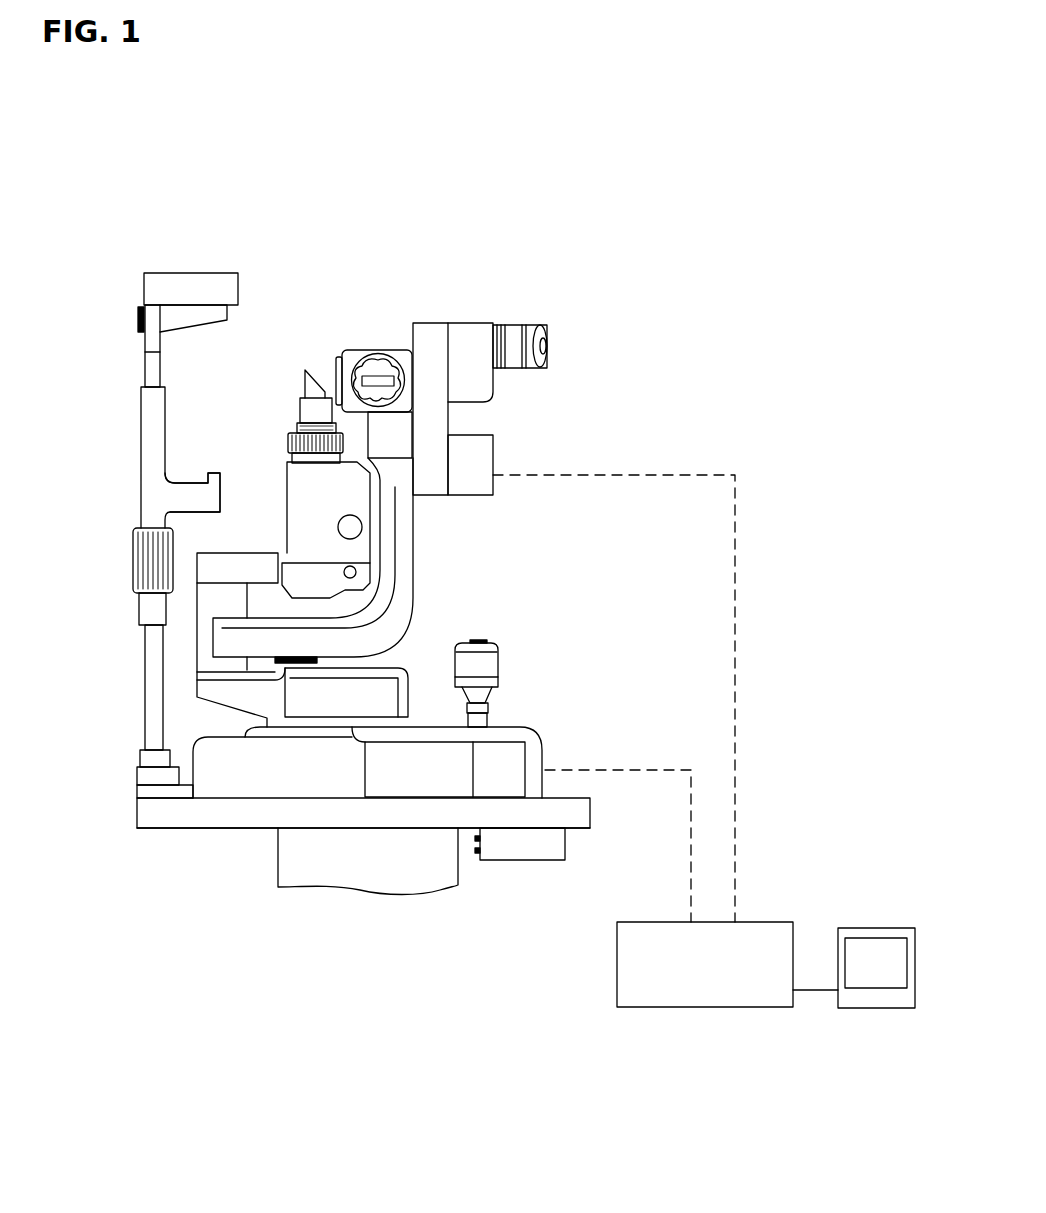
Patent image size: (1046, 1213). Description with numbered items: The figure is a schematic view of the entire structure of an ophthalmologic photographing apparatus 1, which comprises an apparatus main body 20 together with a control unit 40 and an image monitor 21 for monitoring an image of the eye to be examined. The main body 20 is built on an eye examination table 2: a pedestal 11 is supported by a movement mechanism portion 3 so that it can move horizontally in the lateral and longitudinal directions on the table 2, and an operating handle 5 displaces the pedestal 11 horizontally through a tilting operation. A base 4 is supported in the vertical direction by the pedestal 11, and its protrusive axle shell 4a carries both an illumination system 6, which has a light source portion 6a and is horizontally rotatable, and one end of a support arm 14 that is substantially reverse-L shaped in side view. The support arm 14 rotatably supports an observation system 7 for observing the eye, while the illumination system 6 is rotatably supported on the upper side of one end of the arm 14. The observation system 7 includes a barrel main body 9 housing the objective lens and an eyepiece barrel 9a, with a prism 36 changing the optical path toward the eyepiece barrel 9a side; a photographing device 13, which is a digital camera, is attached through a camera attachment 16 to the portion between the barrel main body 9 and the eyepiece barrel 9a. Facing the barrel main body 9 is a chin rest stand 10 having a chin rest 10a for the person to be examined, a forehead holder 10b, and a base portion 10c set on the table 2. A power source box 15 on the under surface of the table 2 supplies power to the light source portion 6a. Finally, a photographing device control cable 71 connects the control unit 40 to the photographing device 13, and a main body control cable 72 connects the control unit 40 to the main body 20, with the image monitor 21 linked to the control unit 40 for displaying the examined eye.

The ophthalmologic photographing apparatus 1 is at (674, 368).
The eye examination table 2 is at (176, 816).
The movement mechanism portion 3 is at (255, 775).
The base 4 is at (378, 678).
The protrusive axle shell 4a is at (240, 692).
The operating handle 5 is at (498, 666).
The illumination system 6 is at (278, 462).
The light source portion 6a is at (325, 558).
The observation system 7 is at (393, 280).
The barrel main body 9 is at (362, 350).
The eyepiece barrel 9a is at (471, 325).
The chin rest stand 10 is at (122, 472).
The chin rest 10a is at (190, 494).
The forehead holder 10b is at (188, 322).
The base portion 10c is at (140, 772).
The pedestal 11 is at (515, 755).
The photographing device 13 is at (480, 497).
The support arm 14 is at (415, 592).
The power source box 15 is at (530, 850).
The camera attachment 16 is at (428, 340).
The apparatus main body 20 is at (306, 345).
The image monitor 21 is at (875, 1010).
The prism 36 is at (302, 386).
The control unit 40 is at (616, 965).
The photographing device control cable 71 is at (736, 553).
The main body control cable 72 is at (640, 770).